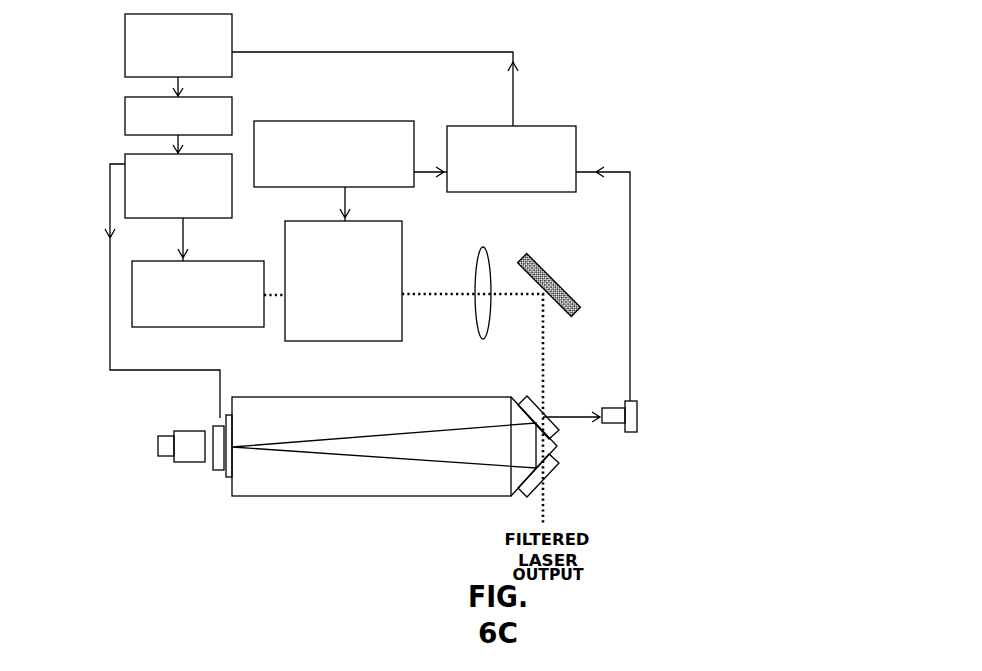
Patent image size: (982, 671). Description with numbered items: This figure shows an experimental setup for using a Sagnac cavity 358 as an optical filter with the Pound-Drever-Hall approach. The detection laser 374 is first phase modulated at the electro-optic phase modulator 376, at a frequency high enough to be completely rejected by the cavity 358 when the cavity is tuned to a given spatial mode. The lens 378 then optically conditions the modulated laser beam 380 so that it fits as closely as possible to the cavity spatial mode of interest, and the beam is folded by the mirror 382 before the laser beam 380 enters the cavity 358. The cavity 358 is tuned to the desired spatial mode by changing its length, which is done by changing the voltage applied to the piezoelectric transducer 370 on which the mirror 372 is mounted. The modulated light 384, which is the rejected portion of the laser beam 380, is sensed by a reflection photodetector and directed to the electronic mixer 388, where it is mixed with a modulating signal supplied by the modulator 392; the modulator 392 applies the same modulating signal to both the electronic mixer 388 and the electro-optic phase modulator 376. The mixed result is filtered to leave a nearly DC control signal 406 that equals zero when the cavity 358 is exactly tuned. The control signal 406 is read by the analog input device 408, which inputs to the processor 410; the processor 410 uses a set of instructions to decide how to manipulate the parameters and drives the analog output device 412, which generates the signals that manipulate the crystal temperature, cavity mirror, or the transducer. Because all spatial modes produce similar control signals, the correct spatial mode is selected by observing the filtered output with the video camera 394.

The analog input device 408 is at (178, 45).
The processor 410 is at (178, 116).
The analog output device 412 is at (178, 186).
The control signal 406 is at (355, 52).
The modulator 392 is at (334, 154).
The electronic mixer 388 is at (511, 159).
The detection laser 374 is at (198, 294).
The electro-optic phase modulator 376 is at (343, 281).
The modulated laser beam 380 is at (407, 292).
The lens 378 is at (482, 340).
The mirror 382 is at (528, 338).
The Sagnac cavity 358 is at (395, 446).
The mirror 372 is at (226, 423).
The piezoelectric transducer (PZT) 370 is at (217, 470).
The video camera 394 is at (156, 448).
The modulated light 384 is at (557, 420).